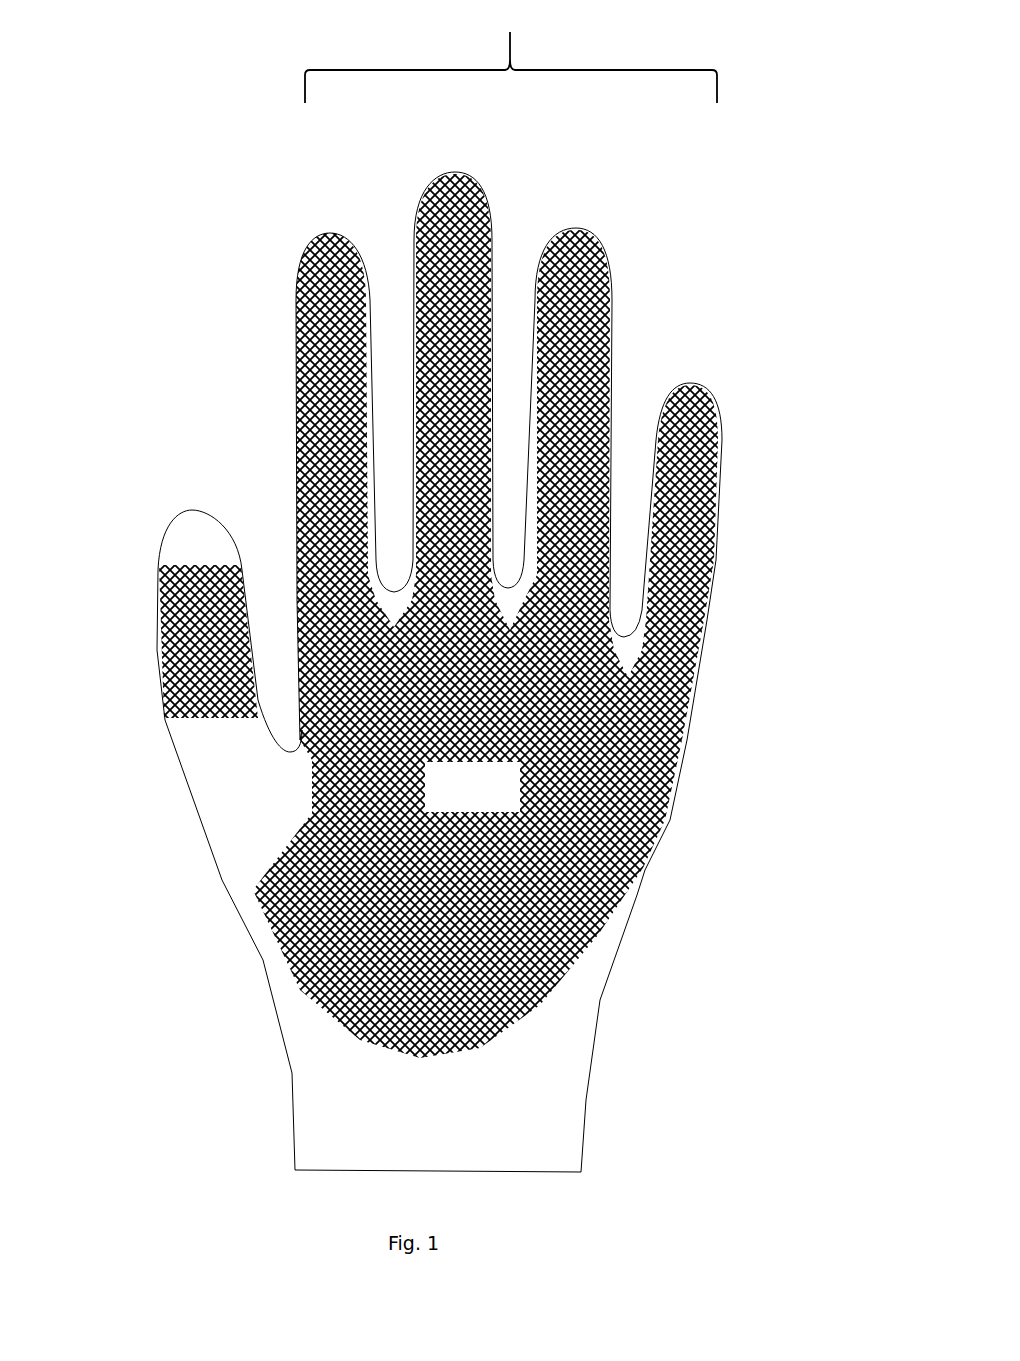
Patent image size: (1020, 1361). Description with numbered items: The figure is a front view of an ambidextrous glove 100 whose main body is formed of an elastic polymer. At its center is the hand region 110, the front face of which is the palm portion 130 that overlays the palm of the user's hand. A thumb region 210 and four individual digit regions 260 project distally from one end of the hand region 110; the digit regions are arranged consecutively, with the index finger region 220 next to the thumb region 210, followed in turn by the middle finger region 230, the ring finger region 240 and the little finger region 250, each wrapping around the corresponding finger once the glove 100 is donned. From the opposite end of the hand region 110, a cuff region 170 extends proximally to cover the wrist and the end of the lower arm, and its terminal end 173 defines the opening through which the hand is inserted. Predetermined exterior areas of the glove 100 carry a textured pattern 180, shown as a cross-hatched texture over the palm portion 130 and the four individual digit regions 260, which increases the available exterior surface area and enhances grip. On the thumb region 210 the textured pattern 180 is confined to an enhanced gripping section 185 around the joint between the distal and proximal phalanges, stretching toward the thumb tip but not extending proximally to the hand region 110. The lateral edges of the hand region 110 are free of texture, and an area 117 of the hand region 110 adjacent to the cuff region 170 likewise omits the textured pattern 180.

The glove 100 is at (152, 331).
The hand region 110 is at (647, 840).
The area proximate to the cuff region 117 is at (570, 1037).
The palm portion 130 is at (475, 796).
The cuff region 170 is at (560, 1113).
The terminal end 173 is at (307, 1165).
The textured pattern 180 is at (283, 917).
The enhanced gripping section 185 is at (178, 652).
The thumb region 210 is at (180, 513).
The index finger region 220 is at (318, 238).
The middle finger region 230 is at (450, 172).
The ring finger region 240 is at (582, 228).
The little finger region 250 is at (688, 381).
The four individual digit regions 260 is at (511, 51).